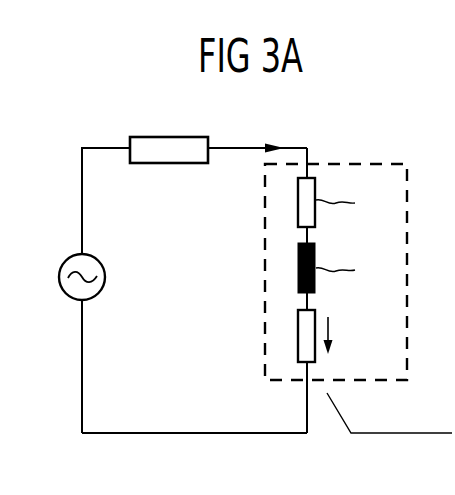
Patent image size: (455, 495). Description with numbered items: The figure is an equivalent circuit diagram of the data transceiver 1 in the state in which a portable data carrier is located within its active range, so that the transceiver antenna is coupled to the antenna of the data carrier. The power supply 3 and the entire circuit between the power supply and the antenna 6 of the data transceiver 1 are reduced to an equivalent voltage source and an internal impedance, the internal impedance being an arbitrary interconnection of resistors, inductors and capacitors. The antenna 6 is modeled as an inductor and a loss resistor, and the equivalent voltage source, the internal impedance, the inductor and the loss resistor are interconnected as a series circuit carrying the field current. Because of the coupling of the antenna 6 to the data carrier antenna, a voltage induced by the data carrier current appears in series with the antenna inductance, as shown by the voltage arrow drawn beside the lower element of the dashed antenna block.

The data transceiver 1 is at (77, 149).
The power supply 3 is at (99, 297).
The antenna 6 is at (357, 164).